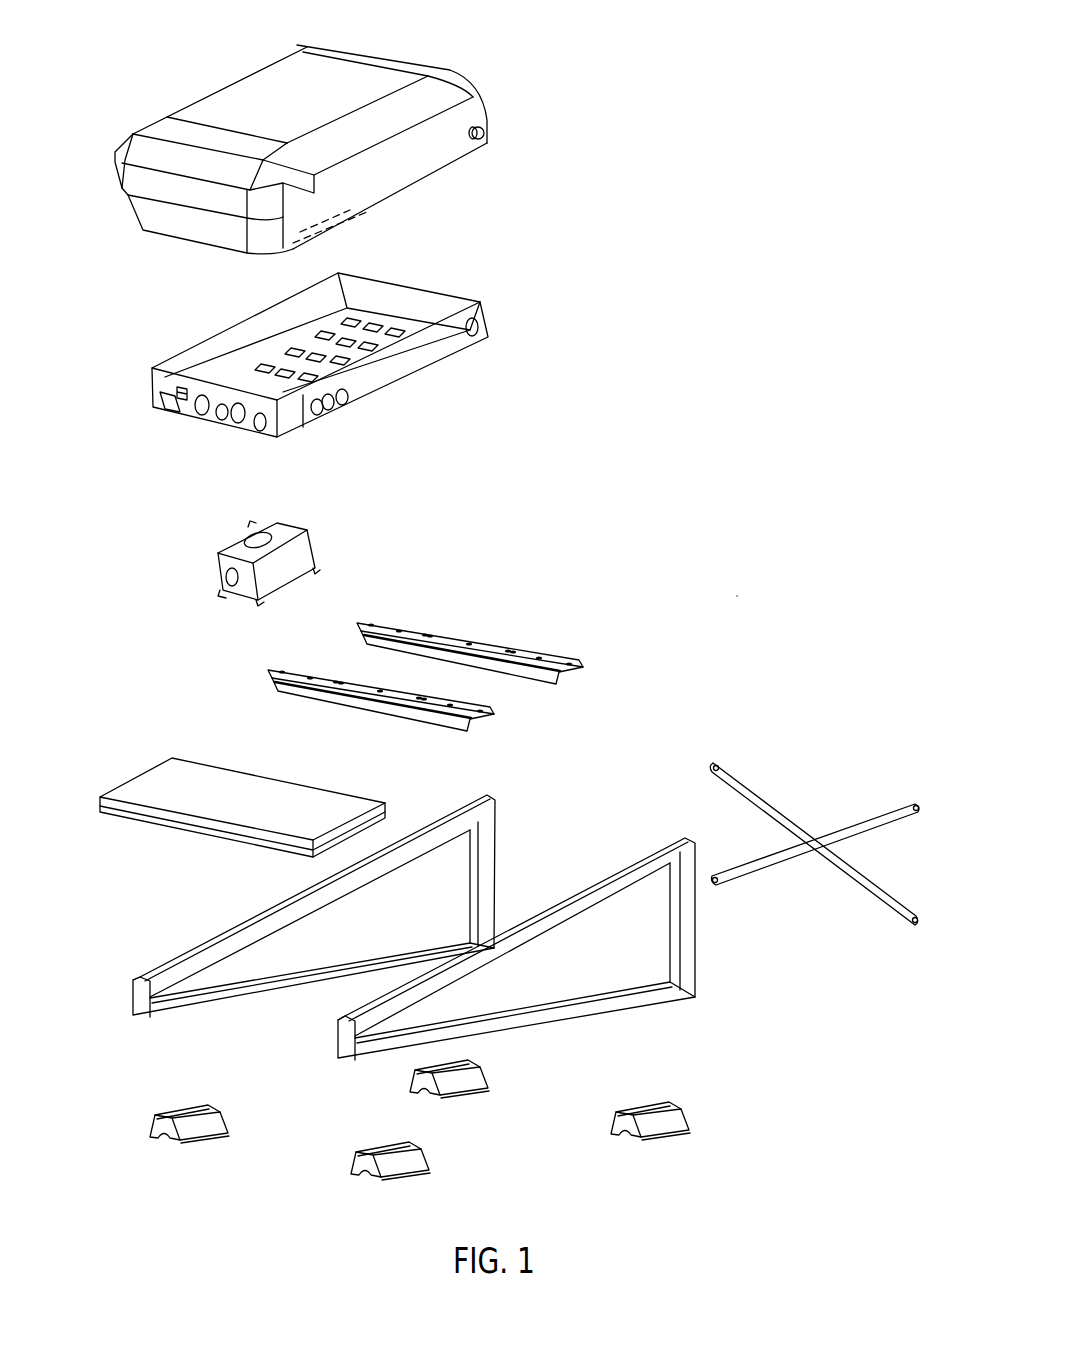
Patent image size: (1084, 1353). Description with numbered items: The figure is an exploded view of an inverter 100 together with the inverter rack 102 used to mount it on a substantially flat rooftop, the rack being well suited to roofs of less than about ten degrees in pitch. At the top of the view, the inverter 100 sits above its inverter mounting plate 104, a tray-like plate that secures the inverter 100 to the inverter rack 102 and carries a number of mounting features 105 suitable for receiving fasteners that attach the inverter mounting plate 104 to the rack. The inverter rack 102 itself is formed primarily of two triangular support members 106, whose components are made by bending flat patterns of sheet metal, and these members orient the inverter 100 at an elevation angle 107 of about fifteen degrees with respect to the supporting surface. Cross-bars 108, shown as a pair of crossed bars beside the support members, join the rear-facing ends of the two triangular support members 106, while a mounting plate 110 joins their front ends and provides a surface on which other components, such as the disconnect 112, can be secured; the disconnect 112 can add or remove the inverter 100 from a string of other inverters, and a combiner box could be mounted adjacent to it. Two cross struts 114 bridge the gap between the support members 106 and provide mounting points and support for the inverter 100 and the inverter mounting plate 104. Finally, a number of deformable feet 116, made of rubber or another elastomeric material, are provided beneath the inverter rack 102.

The inverter 100 is at (505, 130).
The inverter rack 102 is at (742, 590).
The inverter mounting plate 104 is at (375, 339).
The mounting features 105 is at (385, 327).
The triangular support members 106 is at (635, 851).
The elevation angle 107 is at (338, 228).
The cross-bars 108 is at (892, 798).
The mounting plate 110 is at (262, 809).
The disconnect 112 is at (328, 545).
The cross struts 114 is at (324, 664).
The deformable feet 116 is at (245, 1118).